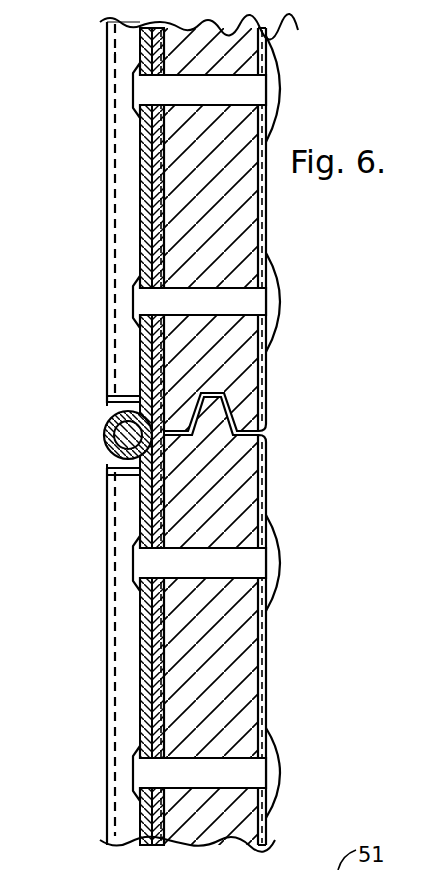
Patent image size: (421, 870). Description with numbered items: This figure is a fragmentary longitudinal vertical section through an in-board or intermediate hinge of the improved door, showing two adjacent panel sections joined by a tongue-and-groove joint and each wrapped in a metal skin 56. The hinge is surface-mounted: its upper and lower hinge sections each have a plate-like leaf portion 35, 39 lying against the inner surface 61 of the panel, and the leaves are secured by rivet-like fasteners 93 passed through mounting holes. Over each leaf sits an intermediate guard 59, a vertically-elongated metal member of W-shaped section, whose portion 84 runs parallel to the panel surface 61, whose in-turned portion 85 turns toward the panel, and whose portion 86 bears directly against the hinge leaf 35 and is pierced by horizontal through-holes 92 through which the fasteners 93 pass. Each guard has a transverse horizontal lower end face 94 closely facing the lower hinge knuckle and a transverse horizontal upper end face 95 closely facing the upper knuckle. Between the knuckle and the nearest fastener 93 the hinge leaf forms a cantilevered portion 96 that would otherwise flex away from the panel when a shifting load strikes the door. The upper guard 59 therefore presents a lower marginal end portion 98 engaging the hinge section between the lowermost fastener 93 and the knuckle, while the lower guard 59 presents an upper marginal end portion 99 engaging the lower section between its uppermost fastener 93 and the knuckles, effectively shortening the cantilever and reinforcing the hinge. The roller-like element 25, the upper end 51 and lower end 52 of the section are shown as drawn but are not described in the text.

The roller spacer 25 is at (98, 431).
The plate-like leaf portion 35 is at (166, 222).
The plate-like leaf portion 39 is at (170, 685).
The upper block end 51 is at (272, 37).
The lower block end 52 is at (274, 822).
The metal skin 56 is at (268, 373).
The intermediate guard 59 is at (100, 192).
The inner surface 61 is at (156, 253).
The guard portion 84 is at (110, 55).
The in-turned portion 85 is at (112, 23).
The guard portion 86 is at (146, 223).
The through-hole 92 is at (150, 87).
The rivet-like fastener 93 is at (272, 88).
The lower end face 94 is at (107, 407).
The upper end face 95 is at (113, 463).
The cantilevered portion 96 is at (173, 377).
The lower marginal end portion 98 is at (140, 387).
The upper marginal end portion 99 is at (137, 477).